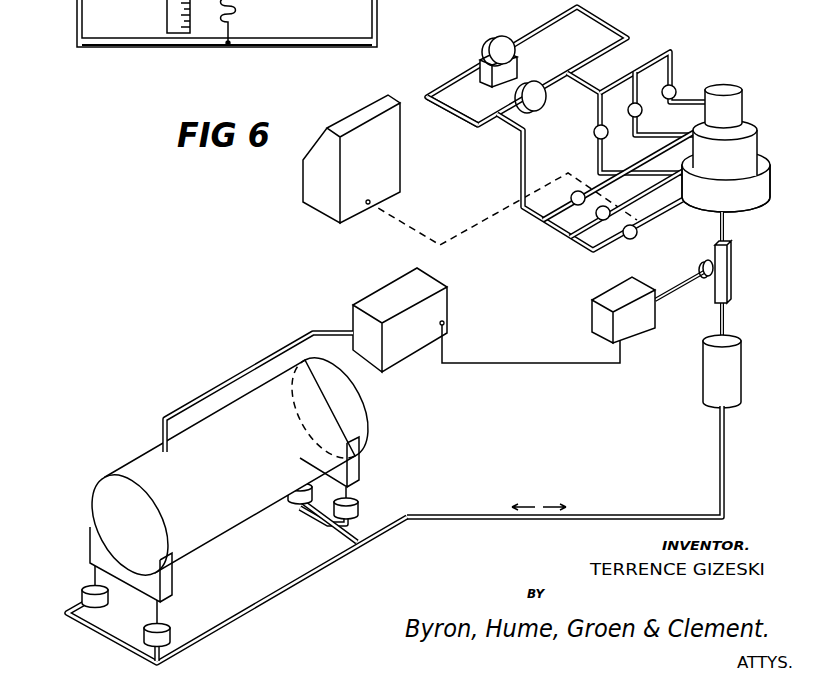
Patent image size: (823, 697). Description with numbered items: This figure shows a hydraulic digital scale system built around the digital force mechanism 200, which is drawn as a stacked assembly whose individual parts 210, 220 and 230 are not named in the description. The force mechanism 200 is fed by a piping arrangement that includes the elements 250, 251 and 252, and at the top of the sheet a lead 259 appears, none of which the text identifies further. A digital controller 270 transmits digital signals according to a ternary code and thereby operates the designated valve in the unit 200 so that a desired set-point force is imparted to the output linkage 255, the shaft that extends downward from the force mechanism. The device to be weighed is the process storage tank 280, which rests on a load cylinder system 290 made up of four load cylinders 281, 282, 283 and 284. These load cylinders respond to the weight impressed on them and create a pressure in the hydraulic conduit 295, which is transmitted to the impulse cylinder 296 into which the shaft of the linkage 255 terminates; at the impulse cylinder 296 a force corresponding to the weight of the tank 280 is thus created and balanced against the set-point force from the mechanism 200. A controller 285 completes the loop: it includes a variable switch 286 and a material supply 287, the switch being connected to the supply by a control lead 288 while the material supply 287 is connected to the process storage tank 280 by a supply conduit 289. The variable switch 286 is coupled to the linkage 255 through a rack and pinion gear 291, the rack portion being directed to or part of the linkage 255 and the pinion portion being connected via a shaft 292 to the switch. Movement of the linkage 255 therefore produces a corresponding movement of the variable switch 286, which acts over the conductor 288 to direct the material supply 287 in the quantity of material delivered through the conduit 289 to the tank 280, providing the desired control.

The digital force mechanism 200 is at (735, 146).
The upper cylinder of dispensing head 210 is at (735, 110).
The intermediate cylinder of dispensing head 220 is at (750, 150).
The lower cylinder housing 230 is at (745, 206).
The drive motor 250 is at (510, 42).
The conduit loop 251 is at (621, 14).
The return conduit 252 is at (452, 114).
The output linkage 255 is at (728, 240).
The lead wire 259 is at (349, 30).
The digital controller 270 is at (313, 171).
The process storage tank 280 is at (345, 413).
The load cylinder 281 is at (84, 603).
The load cylinder 282 is at (176, 643).
The load cylinder 283 is at (357, 505).
The load cylinder 284 is at (283, 504).
The controller 285 is at (476, 320).
The variable switch 286 is at (598, 326).
The material supply 287 is at (355, 319).
The control lead 288 is at (517, 364).
The supply conduit 289 is at (225, 381).
The load cylinder system 290 is at (464, 566).
The rack and pinion gear 291 is at (709, 277).
The shaft 292 is at (680, 284).
The hydraulic conduit 295 is at (655, 514).
The impulse cylinder 296 is at (742, 364).